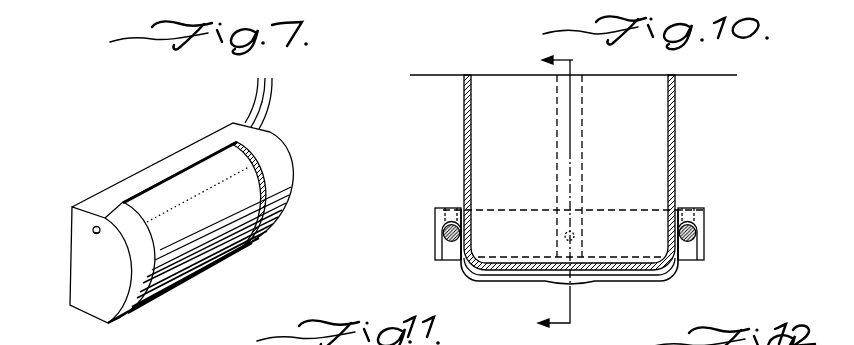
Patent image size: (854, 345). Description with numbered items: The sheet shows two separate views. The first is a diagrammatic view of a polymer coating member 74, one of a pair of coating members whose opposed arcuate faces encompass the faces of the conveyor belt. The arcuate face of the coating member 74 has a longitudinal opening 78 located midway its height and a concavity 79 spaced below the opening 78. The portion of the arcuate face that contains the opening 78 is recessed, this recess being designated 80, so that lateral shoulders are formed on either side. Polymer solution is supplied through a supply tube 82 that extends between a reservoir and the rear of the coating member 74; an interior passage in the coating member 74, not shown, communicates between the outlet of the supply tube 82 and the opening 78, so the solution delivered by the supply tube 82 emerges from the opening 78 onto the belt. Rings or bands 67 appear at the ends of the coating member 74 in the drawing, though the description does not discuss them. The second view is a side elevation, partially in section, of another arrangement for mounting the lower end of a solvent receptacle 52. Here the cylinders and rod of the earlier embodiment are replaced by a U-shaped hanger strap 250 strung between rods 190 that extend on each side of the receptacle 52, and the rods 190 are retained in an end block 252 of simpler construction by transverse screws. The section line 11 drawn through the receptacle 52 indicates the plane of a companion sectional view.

In FIG. 7, the coating member 74 is at (87, 297).
In FIG. 7, the end rings 67 is at (118, 220).
In FIG. 7, the recessed portion 80 is at (198, 190).
In FIG. 7, the supply tube 82 is at (275, 100).
In FIG. 7, the longitudinal opening 78 is at (203, 238).
In FIG. 7, the concavity 79 is at (170, 270).
In FIG. 10, the receptacle 52 is at (675, 142).
In FIG. 10, the section line 11 is at (574, 189).
In FIG. 10, the U-shaped hanger strap 250 is at (667, 283).
In FIG. 10, the rod 190 is at (444, 238).
In FIG. 10, the end block 252 is at (703, 210).